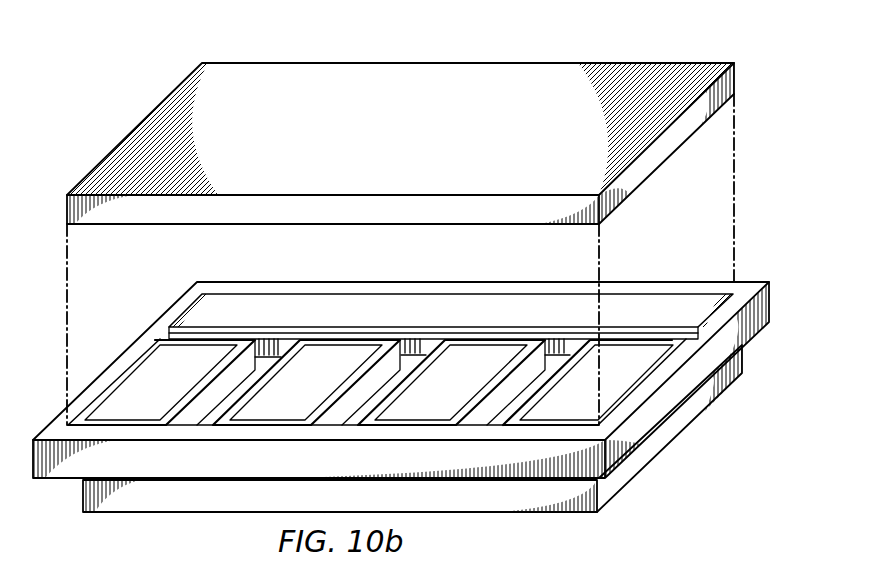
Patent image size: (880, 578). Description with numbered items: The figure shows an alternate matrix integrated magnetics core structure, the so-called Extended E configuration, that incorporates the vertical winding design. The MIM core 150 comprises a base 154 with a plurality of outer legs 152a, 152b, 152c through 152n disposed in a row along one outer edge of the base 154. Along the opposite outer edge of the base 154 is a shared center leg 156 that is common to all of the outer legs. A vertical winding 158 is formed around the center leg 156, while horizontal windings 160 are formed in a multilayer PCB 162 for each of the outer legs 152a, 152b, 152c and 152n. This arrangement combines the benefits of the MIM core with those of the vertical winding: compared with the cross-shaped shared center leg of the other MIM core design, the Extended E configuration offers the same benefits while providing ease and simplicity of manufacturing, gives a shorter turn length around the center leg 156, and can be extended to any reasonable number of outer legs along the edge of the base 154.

The MIM core 150 is at (111, 94).
The outer leg 152a is at (150, 373).
The outer leg 152b is at (333, 355).
The outer leg 152c is at (480, 355).
The outer leg 152n is at (618, 355).
The base 154 is at (632, 473).
The shared center leg 156 is at (428, 312).
The vertical winding 158 is at (282, 340).
The horizontal windings 160 is at (662, 342).
The multilayer PCB 162 is at (745, 328).